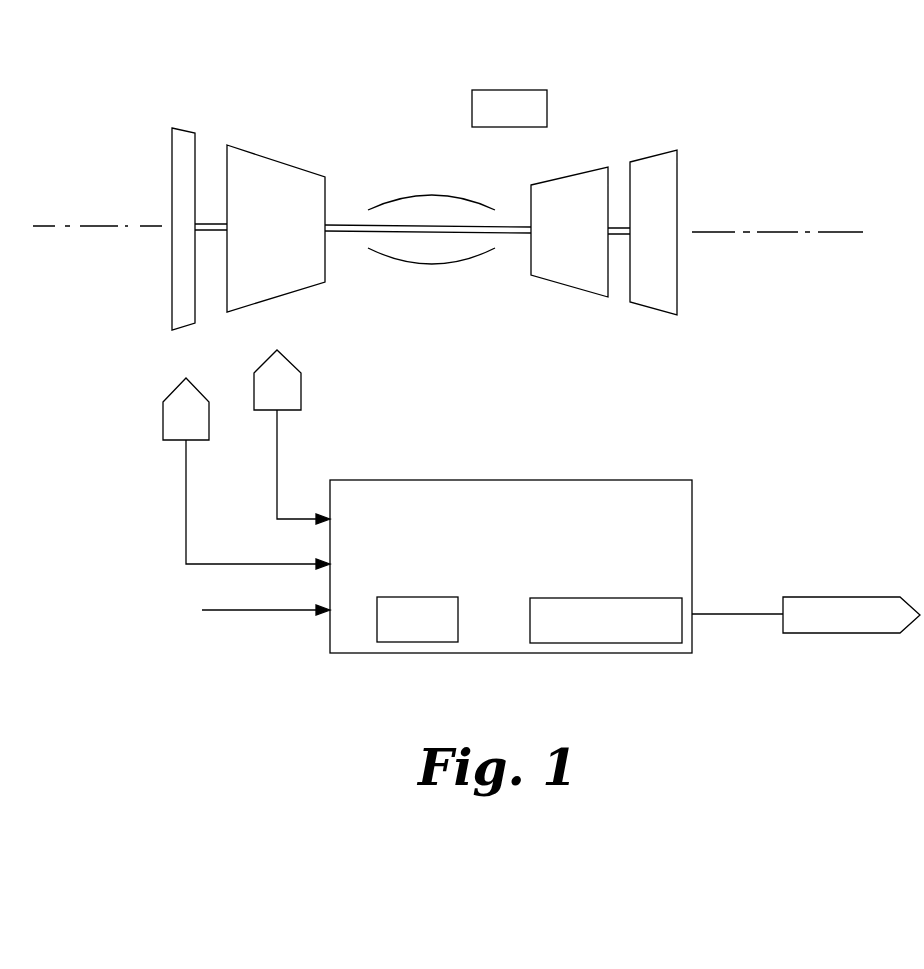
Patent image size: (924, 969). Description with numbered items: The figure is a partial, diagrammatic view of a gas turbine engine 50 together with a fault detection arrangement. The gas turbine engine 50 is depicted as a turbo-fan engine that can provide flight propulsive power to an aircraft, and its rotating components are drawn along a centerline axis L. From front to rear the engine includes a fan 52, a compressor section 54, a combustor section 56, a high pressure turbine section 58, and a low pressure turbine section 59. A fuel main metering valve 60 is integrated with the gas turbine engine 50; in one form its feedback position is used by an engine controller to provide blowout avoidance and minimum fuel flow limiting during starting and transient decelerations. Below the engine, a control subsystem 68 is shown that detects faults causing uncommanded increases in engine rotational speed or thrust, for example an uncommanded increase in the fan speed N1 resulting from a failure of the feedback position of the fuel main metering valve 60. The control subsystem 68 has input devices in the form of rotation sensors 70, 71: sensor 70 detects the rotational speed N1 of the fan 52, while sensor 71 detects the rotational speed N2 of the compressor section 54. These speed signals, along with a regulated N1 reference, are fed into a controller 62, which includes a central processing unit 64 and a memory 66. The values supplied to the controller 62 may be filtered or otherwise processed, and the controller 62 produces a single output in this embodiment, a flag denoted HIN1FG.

The engine centerline axis L is at (80, 226).
The gas turbine engine 50 is at (708, 78).
The fan 52 is at (183, 128).
The compressor section 54 is at (267, 158).
The combustor section 56 is at (430, 194).
The high pressure turbine section 58 is at (560, 286).
The low pressure turbine section 59 is at (648, 312).
The fuel main metering valve 60 is at (548, 98).
The controller 62 is at (493, 480).
The central processing unit 64 is at (373, 628).
The memory 66 is at (683, 628).
The control subsystem 68 is at (177, 680).
The rotation sensor 70 is at (163, 423).
The rotation sensor 71 is at (301, 394).